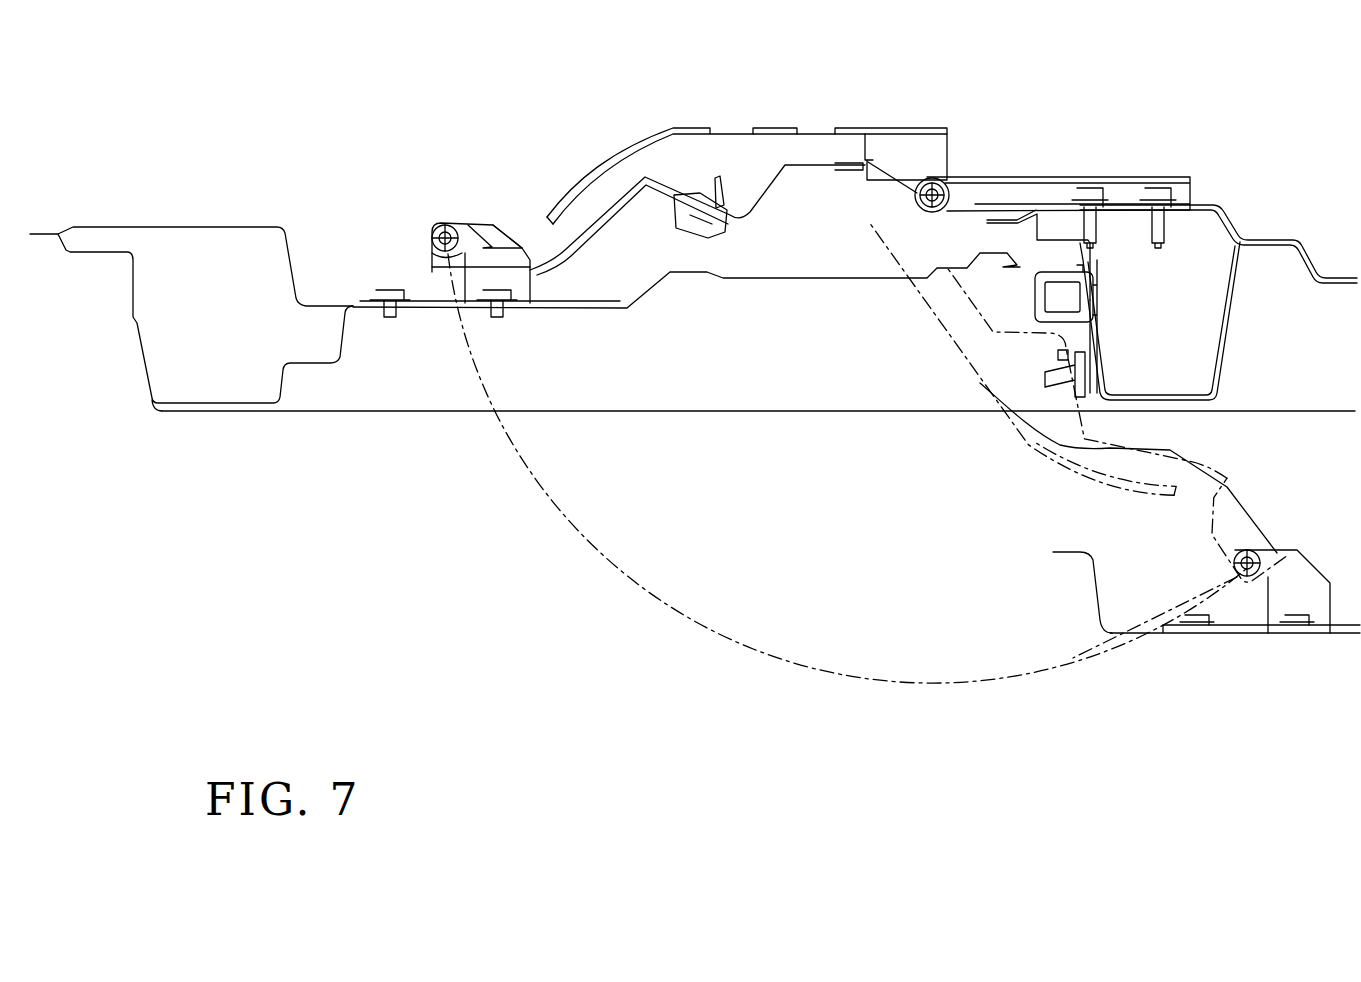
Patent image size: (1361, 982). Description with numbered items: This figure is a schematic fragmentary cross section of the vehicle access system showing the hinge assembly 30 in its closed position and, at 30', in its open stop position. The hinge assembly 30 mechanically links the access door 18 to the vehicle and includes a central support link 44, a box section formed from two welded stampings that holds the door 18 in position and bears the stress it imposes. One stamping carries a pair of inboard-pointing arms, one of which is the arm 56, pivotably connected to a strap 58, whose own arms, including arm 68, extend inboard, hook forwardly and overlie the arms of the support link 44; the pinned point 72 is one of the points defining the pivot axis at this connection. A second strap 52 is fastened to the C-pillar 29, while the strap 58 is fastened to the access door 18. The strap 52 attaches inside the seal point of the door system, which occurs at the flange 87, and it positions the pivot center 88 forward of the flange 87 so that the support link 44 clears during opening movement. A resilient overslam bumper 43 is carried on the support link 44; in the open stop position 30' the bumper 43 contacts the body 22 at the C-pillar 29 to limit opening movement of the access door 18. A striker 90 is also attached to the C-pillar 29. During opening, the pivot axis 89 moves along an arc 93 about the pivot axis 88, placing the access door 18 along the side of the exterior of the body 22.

The access door 18 is at (583, 307).
The body 22 is at (1250, 412).
The C-pillar 29 is at (1230, 222).
The hinge assembly 30 is at (738, 158).
The open stop position of the hinge assembly 30' is at (1077, 377).
The overslam bumper 43 is at (1093, 393).
The central support link 44 is at (1048, 462).
The strap 52 is at (1063, 168).
The arm 56 is at (468, 225).
The strap 58 is at (357, 302).
The arm 68 is at (493, 225).
The pinned point 72 is at (446, 250).
The flange 87 is at (1008, 220).
The pivot center 88 is at (944, 190).
The pivot axis 89 is at (437, 232).
The striker 90 is at (1062, 322).
The arc 93 is at (737, 640).